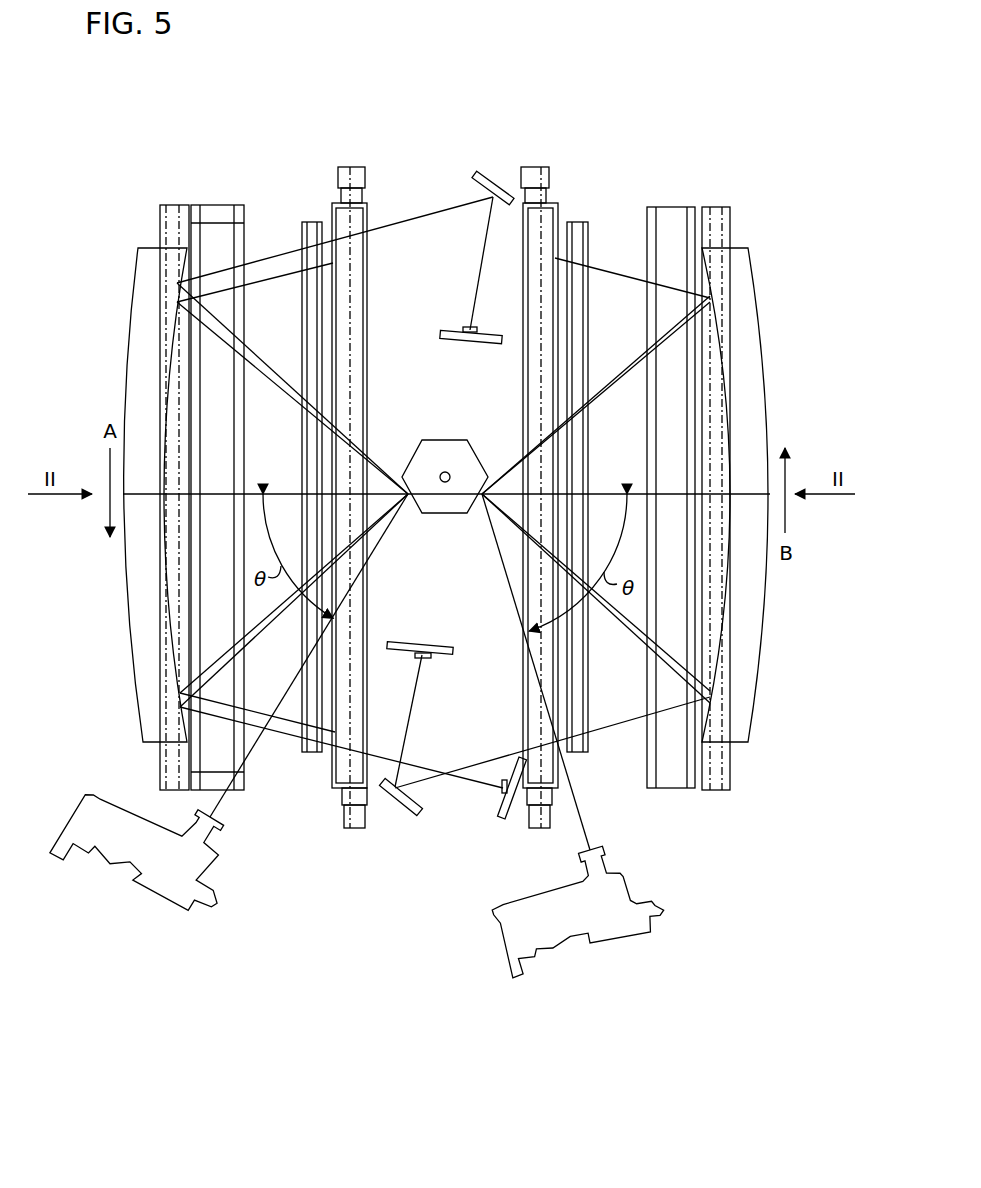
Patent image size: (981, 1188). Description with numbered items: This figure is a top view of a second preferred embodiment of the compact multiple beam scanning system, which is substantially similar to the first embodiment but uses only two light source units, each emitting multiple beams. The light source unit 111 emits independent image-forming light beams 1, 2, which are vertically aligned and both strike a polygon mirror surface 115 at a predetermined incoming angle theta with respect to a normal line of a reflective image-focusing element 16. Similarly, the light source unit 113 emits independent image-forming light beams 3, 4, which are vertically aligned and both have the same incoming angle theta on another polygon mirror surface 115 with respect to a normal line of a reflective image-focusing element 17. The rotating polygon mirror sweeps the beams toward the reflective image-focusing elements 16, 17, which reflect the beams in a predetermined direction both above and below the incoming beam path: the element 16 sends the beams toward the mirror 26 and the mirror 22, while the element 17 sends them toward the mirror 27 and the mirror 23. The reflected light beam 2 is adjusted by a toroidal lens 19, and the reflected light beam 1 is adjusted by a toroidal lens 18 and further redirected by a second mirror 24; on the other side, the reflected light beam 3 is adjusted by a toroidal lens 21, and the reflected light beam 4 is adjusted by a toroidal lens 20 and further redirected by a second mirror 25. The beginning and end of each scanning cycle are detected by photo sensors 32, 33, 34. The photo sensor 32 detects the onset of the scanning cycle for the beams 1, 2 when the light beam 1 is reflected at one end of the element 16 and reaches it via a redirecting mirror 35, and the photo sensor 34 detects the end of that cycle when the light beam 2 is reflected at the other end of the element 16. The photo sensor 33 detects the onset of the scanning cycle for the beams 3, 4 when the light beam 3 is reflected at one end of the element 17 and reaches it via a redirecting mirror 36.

The image-forming light beam 1 is at (309, 661).
The image-forming light beam 2 is at (222, 802).
The image-forming light beam 3 is at (567, 672).
The image-forming light beam 4 is at (585, 827).
The reflective image-focusing element 16 is at (143, 572).
The reflective image-focusing element 17 is at (752, 582).
The toroidal lens 18 is at (215, 213).
The toroidal lens 19 is at (352, 214).
The toroidal lens 20 is at (660, 207).
The toroidal lens 21 is at (523, 258).
The mirror 22 is at (310, 221).
The mirror 23 is at (572, 222).
The second mirror 24 is at (170, 204).
The second mirror 25 is at (717, 207).
The mirror 26 is at (352, 167).
The mirror 27 is at (532, 167).
The photo sensor 32 is at (447, 339).
The photo sensor 33 is at (418, 643).
The photo sensor 34 is at (512, 818).
The redirecting mirror 35 is at (497, 181).
The redirecting mirror 36 is at (412, 813).
The light source unit 111 is at (167, 887).
The light source unit 113 is at (600, 918).
The polygon mirror surface 115 is at (446, 440).